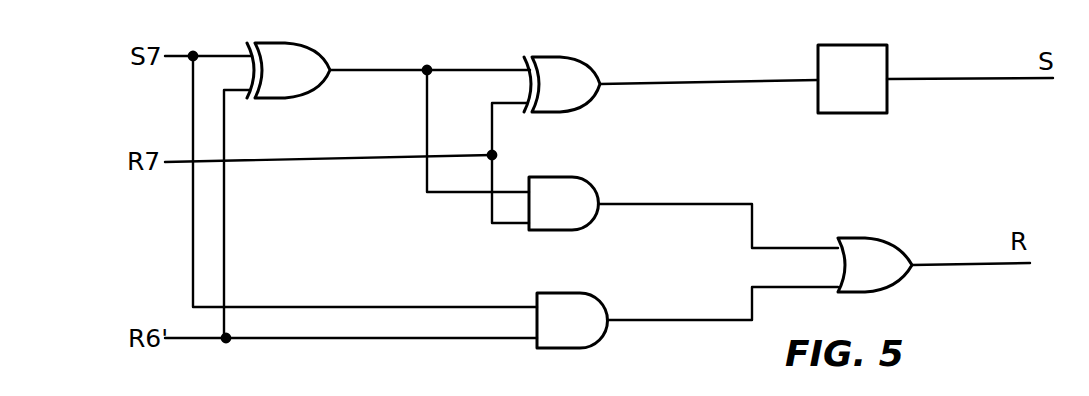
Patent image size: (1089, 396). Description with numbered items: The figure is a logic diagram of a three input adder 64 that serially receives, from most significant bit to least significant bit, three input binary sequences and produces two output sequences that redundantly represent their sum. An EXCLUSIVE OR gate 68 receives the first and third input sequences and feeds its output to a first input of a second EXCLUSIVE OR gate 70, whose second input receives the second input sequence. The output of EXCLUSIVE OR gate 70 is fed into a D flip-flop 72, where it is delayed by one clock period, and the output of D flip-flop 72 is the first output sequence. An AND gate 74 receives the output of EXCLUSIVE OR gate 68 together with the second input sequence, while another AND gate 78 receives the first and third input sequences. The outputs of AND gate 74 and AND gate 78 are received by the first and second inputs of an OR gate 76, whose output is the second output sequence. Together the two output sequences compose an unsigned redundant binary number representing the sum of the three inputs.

The logic circuit 64 is at (705, 48).
The EXCLUSIVE OR gate 68 is at (312, 54).
The EXCLUSIVE OR gate 70 is at (588, 62).
The D flip-flop 72 is at (873, 45).
The AND gate 74 is at (590, 178).
The OR gate 76 is at (872, 238).
The AND gate 78 is at (590, 294).